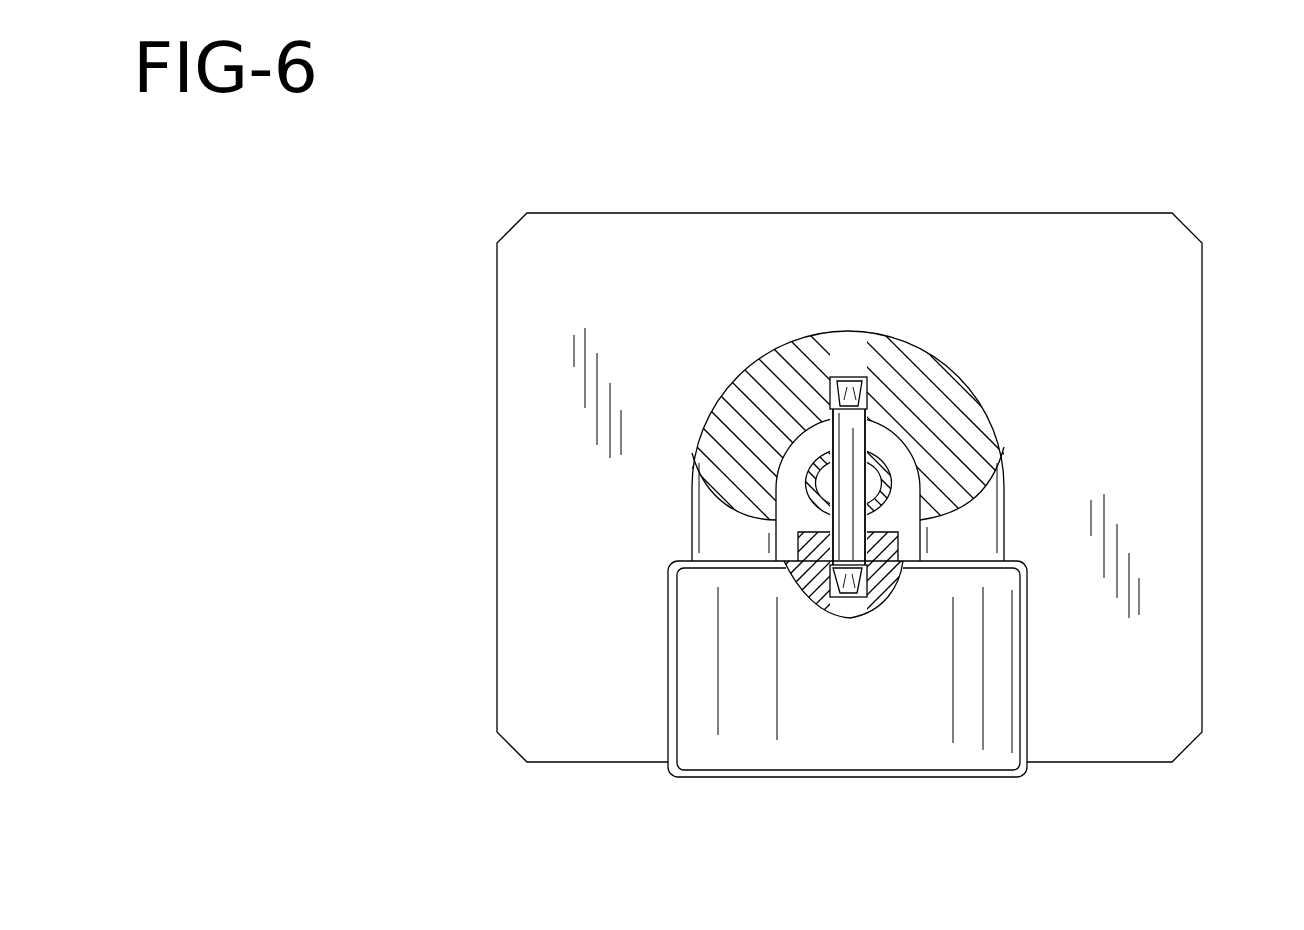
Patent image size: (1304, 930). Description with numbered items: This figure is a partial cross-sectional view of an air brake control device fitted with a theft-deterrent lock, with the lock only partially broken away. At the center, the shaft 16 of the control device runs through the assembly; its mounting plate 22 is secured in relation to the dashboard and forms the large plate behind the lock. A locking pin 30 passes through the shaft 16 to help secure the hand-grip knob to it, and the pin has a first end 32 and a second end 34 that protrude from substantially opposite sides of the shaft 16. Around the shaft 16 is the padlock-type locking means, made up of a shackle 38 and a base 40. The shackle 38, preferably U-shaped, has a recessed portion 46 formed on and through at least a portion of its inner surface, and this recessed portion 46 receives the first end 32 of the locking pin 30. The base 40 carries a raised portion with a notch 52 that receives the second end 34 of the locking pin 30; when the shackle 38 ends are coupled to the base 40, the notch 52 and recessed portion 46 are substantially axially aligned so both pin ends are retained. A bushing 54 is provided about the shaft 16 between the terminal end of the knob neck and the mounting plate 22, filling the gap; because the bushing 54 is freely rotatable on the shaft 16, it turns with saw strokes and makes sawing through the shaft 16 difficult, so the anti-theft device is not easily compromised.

The shaft 16 is at (710, 416).
The mounting plate 22 is at (1168, 262).
The locking pin 30 is at (851, 421).
The first end 32 is at (858, 398).
The second end 34 is at (840, 580).
The shackle 38 is at (993, 505).
The base 40 is at (979, 741).
The recessed portion 46 is at (852, 397).
The notch 52 is at (872, 596).
The bushing 54 is at (890, 503).